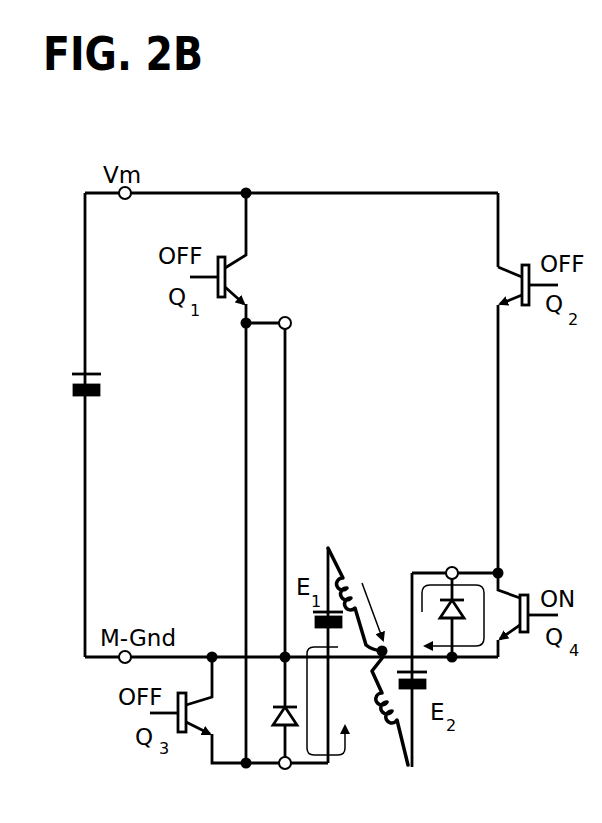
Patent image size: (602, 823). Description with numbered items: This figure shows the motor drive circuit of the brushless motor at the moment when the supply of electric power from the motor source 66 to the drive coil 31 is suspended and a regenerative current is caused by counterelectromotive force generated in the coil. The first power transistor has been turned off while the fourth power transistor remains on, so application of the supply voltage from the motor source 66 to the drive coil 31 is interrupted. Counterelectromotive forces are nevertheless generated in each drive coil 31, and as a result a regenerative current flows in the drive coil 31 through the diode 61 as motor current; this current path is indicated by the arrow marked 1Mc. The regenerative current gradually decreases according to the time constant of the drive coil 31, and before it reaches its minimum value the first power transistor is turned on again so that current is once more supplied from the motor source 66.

The motor source 66 is at (88, 398).
The diode 61 is at (282, 728).
The drive coil 31 is at (345, 590).
The motor current 1Mc is at (407, 579).